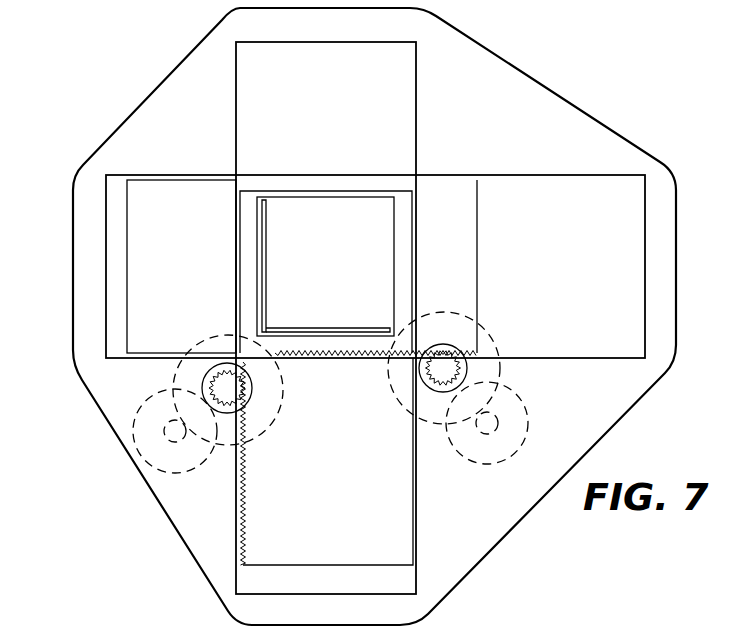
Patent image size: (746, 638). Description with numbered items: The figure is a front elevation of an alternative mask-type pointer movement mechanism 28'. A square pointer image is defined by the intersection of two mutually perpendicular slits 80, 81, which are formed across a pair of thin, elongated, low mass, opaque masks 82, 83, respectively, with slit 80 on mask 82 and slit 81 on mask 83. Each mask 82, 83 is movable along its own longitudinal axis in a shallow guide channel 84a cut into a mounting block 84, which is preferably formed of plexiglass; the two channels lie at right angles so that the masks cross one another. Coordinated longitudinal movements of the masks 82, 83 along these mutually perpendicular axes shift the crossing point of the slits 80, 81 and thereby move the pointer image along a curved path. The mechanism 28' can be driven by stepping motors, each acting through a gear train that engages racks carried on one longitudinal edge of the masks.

The pointer movement mechanism 28' is at (353, 316).
The slit 80 is at (267, 281).
The slit 81 is at (348, 328).
The opaque mask 82 is at (181, 266).
The opaque mask 83 is at (327, 461).
The mounting block 84 is at (505, 538).
The guide channel 84a is at (416, 115).